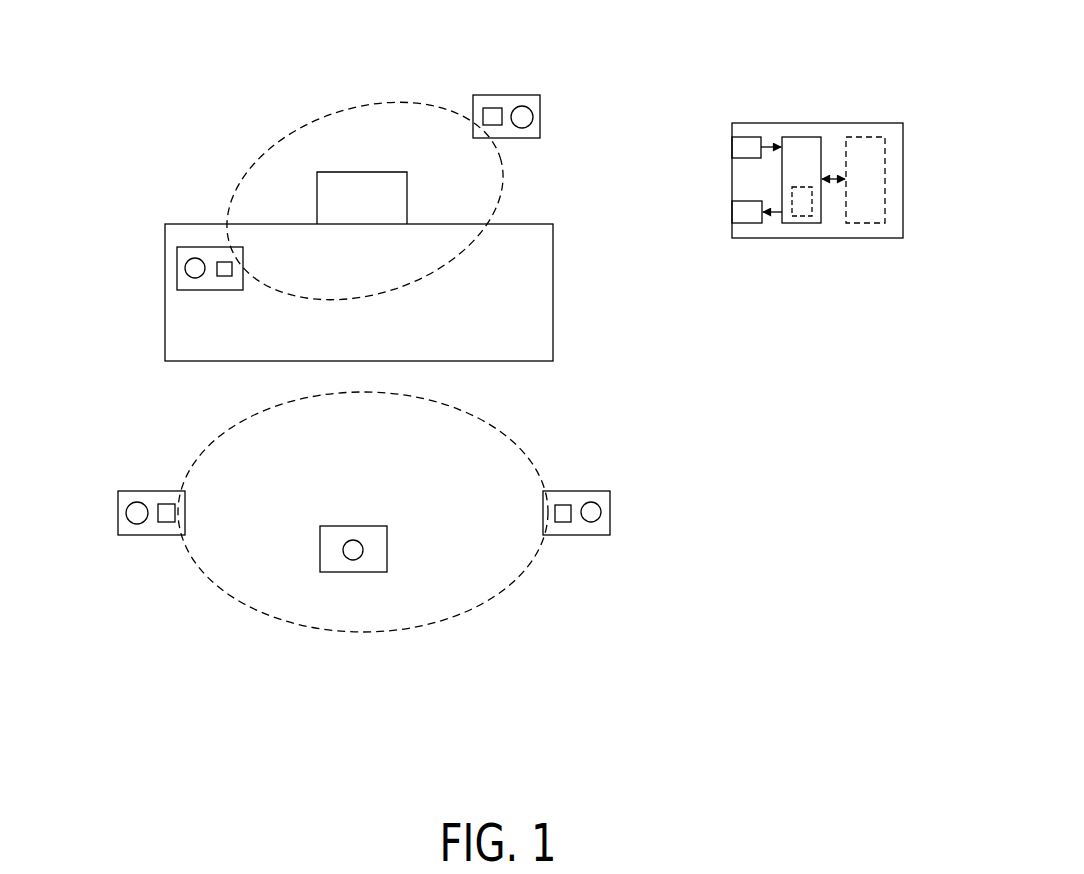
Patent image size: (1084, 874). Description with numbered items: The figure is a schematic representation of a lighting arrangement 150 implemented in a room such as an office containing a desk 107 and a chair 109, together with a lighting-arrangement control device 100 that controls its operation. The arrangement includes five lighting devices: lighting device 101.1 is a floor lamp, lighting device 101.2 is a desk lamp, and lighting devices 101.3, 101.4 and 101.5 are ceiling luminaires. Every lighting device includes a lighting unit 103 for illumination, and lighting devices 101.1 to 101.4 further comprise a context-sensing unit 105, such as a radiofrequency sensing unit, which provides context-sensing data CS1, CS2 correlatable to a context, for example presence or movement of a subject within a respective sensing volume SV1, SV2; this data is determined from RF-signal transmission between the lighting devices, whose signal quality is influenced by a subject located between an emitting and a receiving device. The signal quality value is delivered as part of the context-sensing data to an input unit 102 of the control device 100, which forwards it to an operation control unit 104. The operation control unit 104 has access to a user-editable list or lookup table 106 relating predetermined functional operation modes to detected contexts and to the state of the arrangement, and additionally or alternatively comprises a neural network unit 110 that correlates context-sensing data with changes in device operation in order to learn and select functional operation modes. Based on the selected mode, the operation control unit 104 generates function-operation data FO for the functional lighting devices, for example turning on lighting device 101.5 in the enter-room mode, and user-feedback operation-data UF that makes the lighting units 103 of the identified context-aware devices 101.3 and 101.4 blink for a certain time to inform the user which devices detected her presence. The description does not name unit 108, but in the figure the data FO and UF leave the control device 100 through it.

The lighting arrangement 150 is at (158, 111).
The lighting-arrangement control device 100 is at (851, 97).
The lighting device (floor lamp) 101.1 is at (540, 105).
The lighting device (desk lamp) 101.2 is at (203, 290).
The lighting device (ceiling luminaire) 101.3 is at (151, 491).
The lighting device (ceiling luminaire) 101.4 is at (610, 513).
The lighting device (ceiling luminaire) 101.5 is at (350, 572).
The lighting unit 103 is at (525, 106).
The context-sensing unit 105 is at (488, 108).
The desk 107 is at (262, 355).
The chair 109 is at (341, 213).
The input unit 102 is at (745, 137).
The operation control unit 104 is at (807, 137).
The list or lookup table 106 is at (870, 224).
The output interface 108 is at (745, 238).
The neural network unit 110 is at (802, 217).
The sensing volume SV1 is at (546, 446).
The sensing volume SV2 is at (296, 120).
The context-sensing data CS1 is at (731, 146).
The context-sensing data CS2 is at (731, 150).
The function-operation data FO is at (732, 210).
The user-feedback operation-data UF is at (732, 214).